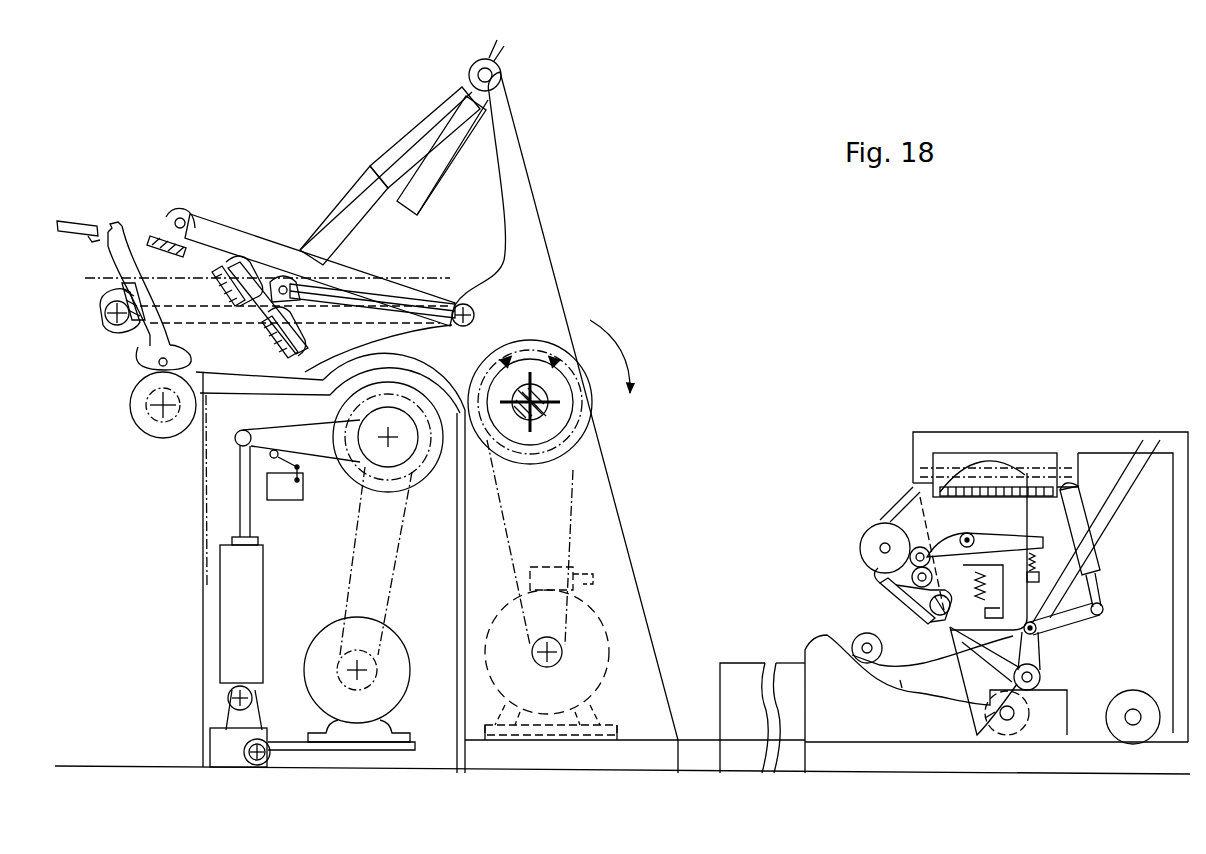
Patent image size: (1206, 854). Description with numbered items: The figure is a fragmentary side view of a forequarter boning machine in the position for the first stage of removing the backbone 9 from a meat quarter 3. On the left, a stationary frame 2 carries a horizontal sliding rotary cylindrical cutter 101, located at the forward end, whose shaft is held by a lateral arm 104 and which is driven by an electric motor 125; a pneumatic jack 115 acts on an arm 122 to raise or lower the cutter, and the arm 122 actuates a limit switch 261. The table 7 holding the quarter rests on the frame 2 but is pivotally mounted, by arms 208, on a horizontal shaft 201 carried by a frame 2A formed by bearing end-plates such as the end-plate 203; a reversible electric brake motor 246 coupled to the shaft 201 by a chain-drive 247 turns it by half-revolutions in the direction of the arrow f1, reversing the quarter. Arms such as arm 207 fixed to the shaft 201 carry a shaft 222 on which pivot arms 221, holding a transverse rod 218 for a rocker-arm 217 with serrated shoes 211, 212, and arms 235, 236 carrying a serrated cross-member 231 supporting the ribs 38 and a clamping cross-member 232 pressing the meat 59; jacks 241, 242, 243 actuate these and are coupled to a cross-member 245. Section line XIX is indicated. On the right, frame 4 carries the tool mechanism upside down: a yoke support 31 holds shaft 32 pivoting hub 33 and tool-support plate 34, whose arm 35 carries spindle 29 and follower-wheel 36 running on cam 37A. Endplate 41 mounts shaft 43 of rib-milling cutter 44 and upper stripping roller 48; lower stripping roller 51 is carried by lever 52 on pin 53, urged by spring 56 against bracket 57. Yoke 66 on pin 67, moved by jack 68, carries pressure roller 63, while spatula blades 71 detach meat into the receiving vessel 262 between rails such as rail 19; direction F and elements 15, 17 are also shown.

The frame 2 is at (203, 657).
The frame 2A is at (638, 571).
The meat quarter 3 is at (82, 216).
The frame 4 is at (1104, 434).
The table 7 is at (217, 383).
The backbone 9 is at (150, 358).
The roller 15 is at (995, 718).
The roller 17 is at (1140, 705).
The rail 19 is at (1088, 750).
The spindle 29 is at (1032, 678).
The support 31 is at (928, 440).
The horizontal shaft 32 is at (1043, 473).
The hub 33 is at (948, 465).
The tool-support plate 34 is at (970, 487).
The arm 35 is at (1025, 653).
The follower-wheel 36 is at (1007, 665).
The cam 37A is at (885, 675).
The ribs 38 is at (92, 238).
The endplate 41 is at (913, 520).
The shaft 43 is at (893, 522).
The rib-milling cylindrical cutter 44 is at (872, 558).
The upper stripping roller 48 is at (912, 577).
The lower stripping roller 51 is at (937, 548).
The two-arm lever 52 is at (1005, 543).
The pin 53 is at (967, 533).
The helical compression spring 56 is at (1125, 485).
The bracket 57 is at (1090, 565).
The meat 59 is at (140, 250).
The upper pressure roller 63 is at (866, 635).
The yoke 66 is at (918, 667).
The pin 67 is at (1150, 450).
The pneumatic jack system 68 is at (1160, 440).
The blades 71 is at (895, 597).
The sliding rotary cylindrical cutter 101 is at (137, 405).
The lateral arm 104 is at (273, 452).
The pneumatic jack 115 is at (220, 600).
The arm 122 is at (290, 432).
The electric motor 125 is at (323, 686).
The horizontal shaft 201 is at (548, 400).
The bearing end-plate 203 is at (605, 529).
The arm 207 is at (518, 163).
The arm 208 is at (397, 350).
The serrated shoe 211 is at (236, 280).
The serrated shoe 212 is at (273, 331).
The rocker-arm 217 is at (264, 287).
The horizontal transverse rod 218 is at (281, 278).
The arm 221 is at (300, 307).
The shaft 222 is at (474, 308).
The serrated cross-member 231 is at (105, 313).
The clamping cross-member 232 is at (157, 238).
The arm 235 is at (357, 317).
The arm 236 is at (220, 237).
The jack 241 is at (427, 197).
The jack 242 is at (357, 227).
The jack 243 is at (377, 160).
The cross-member 245 is at (493, 78).
The reversible electric brake motor 246 is at (587, 670).
The chain-drive 247 is at (573, 492).
The limit switch 261 is at (280, 487).
The receiving vessel 262 is at (738, 677).
The direction arrow F is at (1142, 665).
The arrow f1 is at (612, 356).
The section view arrow XIX is at (182, 557).